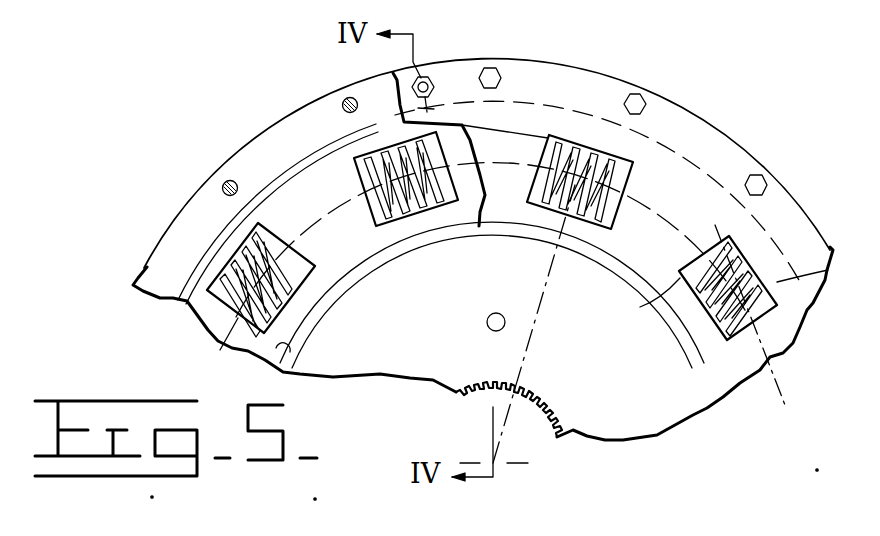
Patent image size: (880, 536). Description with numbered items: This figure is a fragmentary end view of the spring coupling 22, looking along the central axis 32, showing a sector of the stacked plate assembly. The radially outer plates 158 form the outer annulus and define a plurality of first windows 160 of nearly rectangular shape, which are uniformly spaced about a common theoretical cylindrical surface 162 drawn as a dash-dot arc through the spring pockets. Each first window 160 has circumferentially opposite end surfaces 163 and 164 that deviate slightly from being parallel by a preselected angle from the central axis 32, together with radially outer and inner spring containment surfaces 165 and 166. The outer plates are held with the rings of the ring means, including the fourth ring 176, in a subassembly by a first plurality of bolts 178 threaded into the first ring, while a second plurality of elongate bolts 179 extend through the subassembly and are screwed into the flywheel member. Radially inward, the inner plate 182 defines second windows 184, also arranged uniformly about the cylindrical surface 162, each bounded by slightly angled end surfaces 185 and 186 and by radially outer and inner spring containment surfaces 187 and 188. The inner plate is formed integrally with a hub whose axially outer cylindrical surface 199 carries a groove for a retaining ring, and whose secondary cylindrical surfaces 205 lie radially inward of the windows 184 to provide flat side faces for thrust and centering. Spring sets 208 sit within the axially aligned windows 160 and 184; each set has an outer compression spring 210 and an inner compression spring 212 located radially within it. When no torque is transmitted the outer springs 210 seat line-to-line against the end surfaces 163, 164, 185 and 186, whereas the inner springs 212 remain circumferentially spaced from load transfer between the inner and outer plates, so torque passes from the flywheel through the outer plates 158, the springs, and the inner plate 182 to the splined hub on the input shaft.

The spring coupling 22 is at (740, 135).
The central axis 32 is at (493, 460).
The radially outer plates 158 is at (667, 113).
The first windows 160 is at (747, 243).
The common theoretical cylindrical surface 162 is at (750, 323).
The end surface of first window 163 is at (542, 160).
The end surface of first window 164 is at (618, 210).
The radially outer spring containment surface 165 is at (610, 172).
The radially inner spring containment surface 166 is at (560, 205).
The fourth ring 176 is at (325, 117).
The bolts 178 is at (423, 76).
The elongate bolts 179 is at (224, 182).
The radially inner plate 182 is at (304, 178).
The second windows 184 is at (222, 238).
The end surface of second window 185 is at (232, 309).
The end surface of second window 186 is at (285, 240).
The radially outer spring containment surface 187 is at (213, 267).
The radially inner spring containment surface 188 is at (316, 315).
The axially outer cylindrical surface 199 is at (690, 357).
The secondary cylindrical surfaces 205 is at (273, 347).
The spring sets 208 is at (277, 224).
The outer compression spring 210 is at (640, 307).
The inner compression spring 212 is at (828, 272).